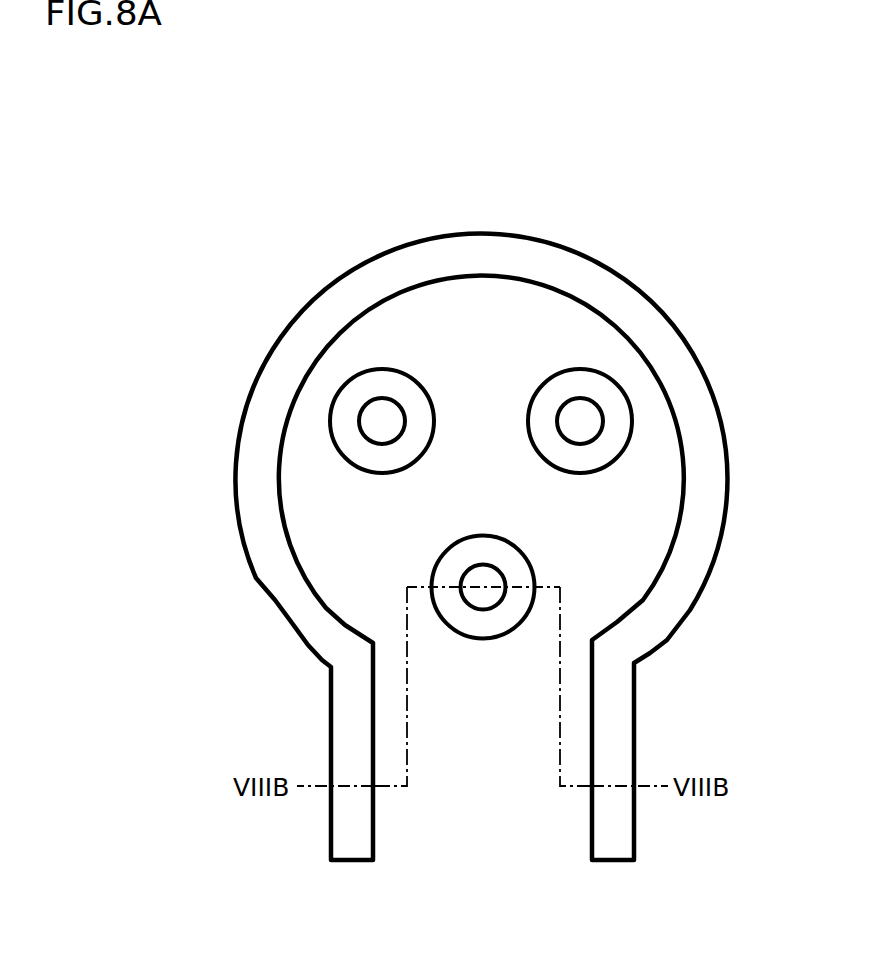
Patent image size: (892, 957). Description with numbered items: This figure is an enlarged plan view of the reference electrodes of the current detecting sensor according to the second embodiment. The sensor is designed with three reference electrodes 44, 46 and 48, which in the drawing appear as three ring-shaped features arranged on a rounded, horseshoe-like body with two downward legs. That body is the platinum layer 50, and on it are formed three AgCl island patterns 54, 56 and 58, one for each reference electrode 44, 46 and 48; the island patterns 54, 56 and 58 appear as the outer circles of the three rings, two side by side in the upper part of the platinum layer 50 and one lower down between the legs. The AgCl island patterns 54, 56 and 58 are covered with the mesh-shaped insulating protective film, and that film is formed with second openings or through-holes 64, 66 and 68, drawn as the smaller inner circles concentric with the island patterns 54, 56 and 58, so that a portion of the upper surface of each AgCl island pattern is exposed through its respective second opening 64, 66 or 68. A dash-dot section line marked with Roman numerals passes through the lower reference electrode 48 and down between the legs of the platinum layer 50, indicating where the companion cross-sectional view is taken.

The reference electrode 44 is at (293, 362).
The reference electrode 46 is at (663, 339).
The reference electrode 48 is at (482, 666).
The platinum layer 50 is at (653, 502).
The AgCl island pattern 54 is at (348, 410).
The AgCl island pattern 56 is at (602, 390).
The AgCl island pattern 58 is at (450, 598).
The second opening 64 is at (380, 427).
The second opening 66 is at (585, 417).
The second opening 68 is at (530, 562).